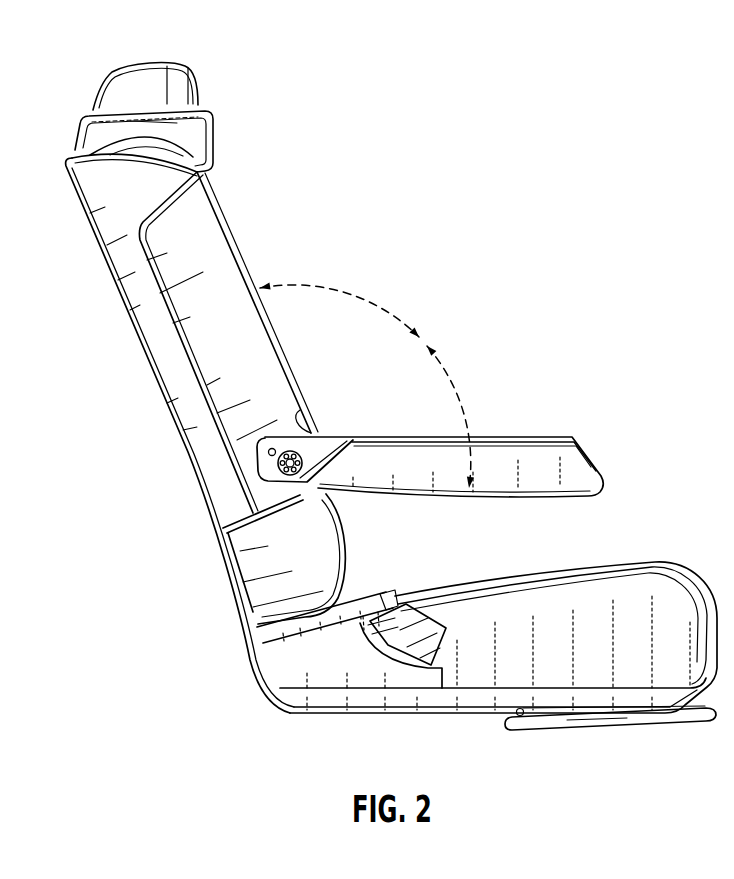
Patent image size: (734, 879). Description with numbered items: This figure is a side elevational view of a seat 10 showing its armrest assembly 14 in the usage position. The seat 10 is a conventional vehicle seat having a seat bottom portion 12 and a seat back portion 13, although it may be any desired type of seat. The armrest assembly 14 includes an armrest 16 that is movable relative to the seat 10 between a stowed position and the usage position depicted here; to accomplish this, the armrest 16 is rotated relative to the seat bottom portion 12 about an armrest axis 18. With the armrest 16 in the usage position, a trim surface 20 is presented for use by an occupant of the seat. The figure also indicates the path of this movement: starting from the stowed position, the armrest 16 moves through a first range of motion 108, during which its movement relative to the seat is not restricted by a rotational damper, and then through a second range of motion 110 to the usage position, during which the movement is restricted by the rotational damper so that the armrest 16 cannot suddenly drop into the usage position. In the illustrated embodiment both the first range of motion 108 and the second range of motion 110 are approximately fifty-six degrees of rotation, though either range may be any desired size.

The seat 10 is at (489, 75).
The seat bottom portion 12 is at (657, 558).
The seat back portion 13 is at (134, 334).
The armrest assembly 14 is at (498, 254).
The armrest 16 is at (599, 466).
The armrest axis 18 is at (262, 470).
The trim surface 20 is at (526, 436).
The first range of motion 108 is at (322, 286).
The second range of motion 110 is at (439, 362).